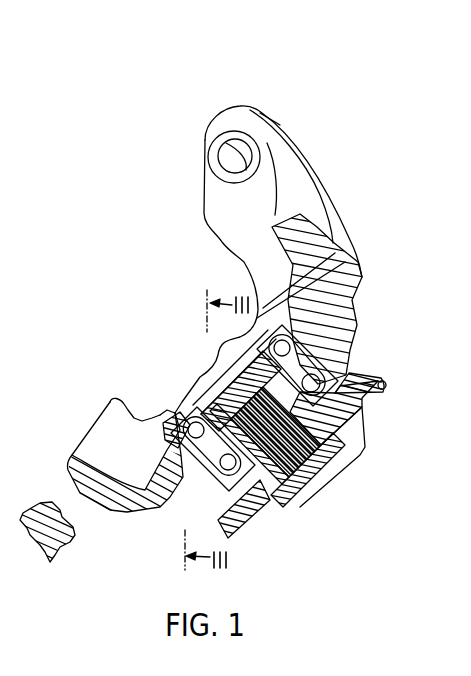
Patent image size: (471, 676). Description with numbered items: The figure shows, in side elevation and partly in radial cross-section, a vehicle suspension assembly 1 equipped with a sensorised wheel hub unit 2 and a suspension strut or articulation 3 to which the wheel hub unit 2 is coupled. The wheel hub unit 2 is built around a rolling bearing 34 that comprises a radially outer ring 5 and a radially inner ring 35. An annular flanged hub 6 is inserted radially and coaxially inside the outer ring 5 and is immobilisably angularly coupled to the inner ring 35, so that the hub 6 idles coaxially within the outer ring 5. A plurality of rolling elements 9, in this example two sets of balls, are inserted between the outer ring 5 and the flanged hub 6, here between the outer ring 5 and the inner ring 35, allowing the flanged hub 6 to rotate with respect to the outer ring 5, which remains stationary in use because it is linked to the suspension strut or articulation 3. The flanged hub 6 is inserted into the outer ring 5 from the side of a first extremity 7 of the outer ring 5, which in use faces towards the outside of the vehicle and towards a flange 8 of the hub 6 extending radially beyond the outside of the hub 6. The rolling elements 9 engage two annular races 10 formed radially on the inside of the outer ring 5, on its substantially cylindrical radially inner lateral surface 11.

The vehicle suspension assembly 1 is at (354, 170).
The sensorised wheel hub unit 2 is at (266, 538).
The suspension strut or articulation 3 is at (332, 258).
The radially outer ring 5 is at (338, 342).
The annular flanged hub 6 is at (328, 437).
The first extremity 7 is at (263, 502).
The flange 8 is at (386, 386).
The rolling elements 9 is at (295, 343).
The annular races 10 is at (340, 332).
The radially inner lateral surface 11 is at (196, 408).
The rolling bearing 34 is at (176, 392).
The radially inner ring 35 is at (334, 432).